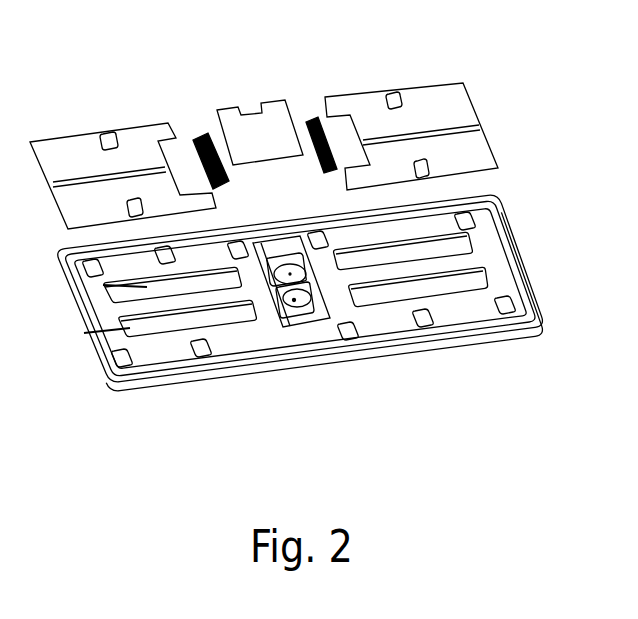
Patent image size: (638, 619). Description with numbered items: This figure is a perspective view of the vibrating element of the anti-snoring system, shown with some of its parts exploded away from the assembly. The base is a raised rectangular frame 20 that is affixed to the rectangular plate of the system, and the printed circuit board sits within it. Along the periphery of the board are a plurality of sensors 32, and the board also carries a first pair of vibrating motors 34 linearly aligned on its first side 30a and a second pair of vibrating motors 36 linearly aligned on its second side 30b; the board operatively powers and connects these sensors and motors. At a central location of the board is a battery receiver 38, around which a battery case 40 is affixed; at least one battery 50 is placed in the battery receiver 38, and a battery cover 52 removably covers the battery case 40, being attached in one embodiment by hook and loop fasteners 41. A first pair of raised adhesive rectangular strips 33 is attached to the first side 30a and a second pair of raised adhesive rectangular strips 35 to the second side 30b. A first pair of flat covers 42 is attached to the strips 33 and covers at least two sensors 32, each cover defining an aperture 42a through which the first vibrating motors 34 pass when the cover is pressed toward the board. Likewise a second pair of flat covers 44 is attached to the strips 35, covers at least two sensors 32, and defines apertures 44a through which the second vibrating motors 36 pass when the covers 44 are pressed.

The raised rectangular frame 20 is at (533, 299).
The first side of the printed circuit board 30a is at (226, 342).
The second side of the printed circuit board 30b is at (452, 307).
The sensors 32 is at (118, 378).
The first pair of raised adhesive rectangular strips 33 is at (103, 283).
The first pair of vibrating motors 34 is at (205, 356).
The second pair of raised adhesive rectangular strips 35 is at (460, 255).
The second pair of vibrating motors 36 is at (427, 318).
The battery receiver 38 is at (288, 302).
The battery case 40 is at (307, 277).
The hook and loop fasteners 41 is at (320, 122).
The first pair of flat covers 42 is at (67, 155).
The apertures of the first flat covers 42a is at (105, 145).
The second pair of flat covers 44 is at (455, 100).
The apertures of the second flat covers 44a is at (397, 100).
The battery 50 is at (308, 325).
The battery cover 52 is at (268, 113).